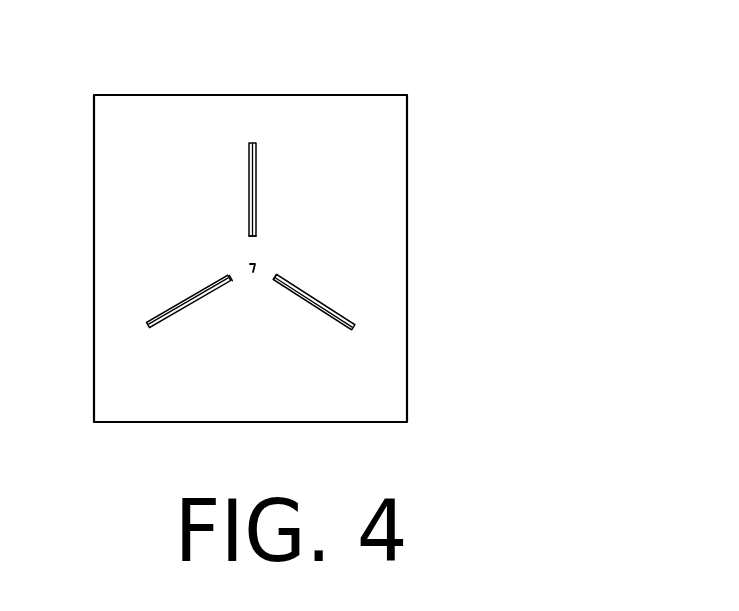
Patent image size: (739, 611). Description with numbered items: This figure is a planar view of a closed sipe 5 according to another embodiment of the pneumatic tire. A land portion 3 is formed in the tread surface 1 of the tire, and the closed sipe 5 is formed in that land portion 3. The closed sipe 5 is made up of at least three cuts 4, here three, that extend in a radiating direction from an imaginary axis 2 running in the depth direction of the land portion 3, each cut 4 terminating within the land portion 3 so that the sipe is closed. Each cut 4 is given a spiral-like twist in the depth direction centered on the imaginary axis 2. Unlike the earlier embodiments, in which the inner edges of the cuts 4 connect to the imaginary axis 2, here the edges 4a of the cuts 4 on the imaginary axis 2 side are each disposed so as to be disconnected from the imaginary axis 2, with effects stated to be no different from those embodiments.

The tread surface 1 is at (417, 111).
The imaginary axis 2 is at (252, 274).
The land portion 3 is at (121, 406).
The cut 4 is at (257, 153).
The edge of cut 4a is at (251, 236).
The closed sipe 5 is at (226, 229).